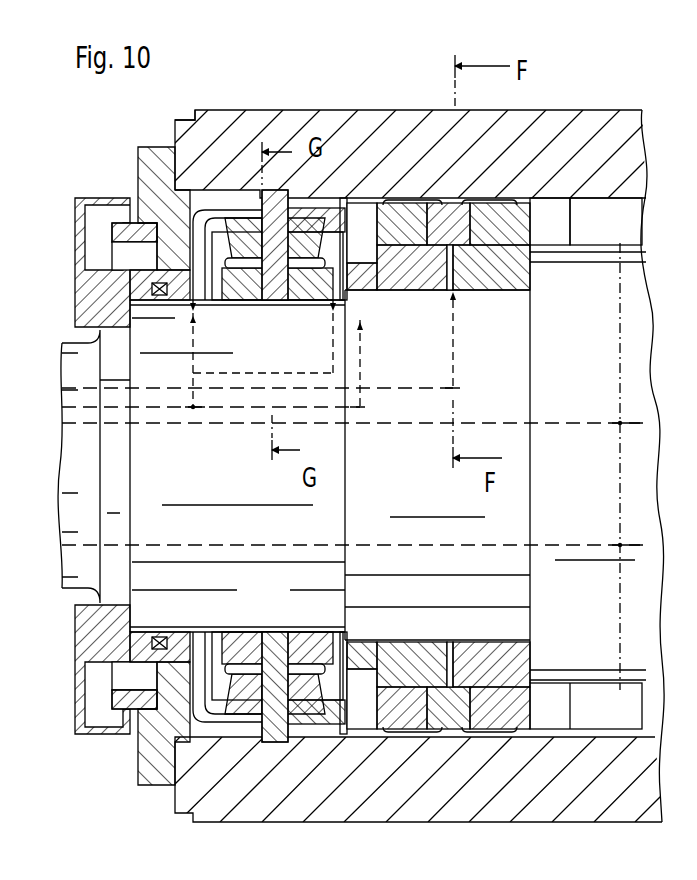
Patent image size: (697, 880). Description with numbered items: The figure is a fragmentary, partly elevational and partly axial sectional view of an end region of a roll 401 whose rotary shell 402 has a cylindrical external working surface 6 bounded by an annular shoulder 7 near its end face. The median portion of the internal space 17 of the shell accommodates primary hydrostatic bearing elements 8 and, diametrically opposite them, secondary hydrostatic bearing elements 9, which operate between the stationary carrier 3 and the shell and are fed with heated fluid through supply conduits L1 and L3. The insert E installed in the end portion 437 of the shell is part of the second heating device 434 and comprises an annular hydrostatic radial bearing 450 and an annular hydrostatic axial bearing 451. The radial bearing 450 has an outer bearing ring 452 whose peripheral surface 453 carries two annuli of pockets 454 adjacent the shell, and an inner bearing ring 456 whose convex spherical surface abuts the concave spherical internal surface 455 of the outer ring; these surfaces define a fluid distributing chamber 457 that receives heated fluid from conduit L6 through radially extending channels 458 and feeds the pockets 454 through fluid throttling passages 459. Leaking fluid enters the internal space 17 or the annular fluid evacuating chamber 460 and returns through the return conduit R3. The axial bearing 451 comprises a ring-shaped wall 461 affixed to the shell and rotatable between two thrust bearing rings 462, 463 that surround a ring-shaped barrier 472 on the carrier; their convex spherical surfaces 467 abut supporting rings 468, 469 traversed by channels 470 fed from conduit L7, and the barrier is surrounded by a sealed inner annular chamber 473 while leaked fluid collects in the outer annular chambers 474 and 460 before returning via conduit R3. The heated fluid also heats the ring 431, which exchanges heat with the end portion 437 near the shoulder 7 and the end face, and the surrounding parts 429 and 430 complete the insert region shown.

The carrier 3 is at (640, 458).
The external working surface 6 is at (242, 111).
The annular shoulder 7 is at (185, 120).
The primary hydrostatic bearing element 8 is at (618, 227).
The secondary hydrostatic bearing element 9 is at (642, 708).
The internal space 17 is at (547, 211).
The roll 401 is at (606, 104).
The shell 402 is at (630, 133).
The lower seal housing 429 is at (180, 674).
The upper seal housing 430 is at (95, 250).
The ring 431 is at (170, 735).
The second heating device 434 is at (355, 225).
The end portion 437 is at (210, 770).
The annular hydrostatic radial bearing 450 is at (510, 296).
The annular hydrostatic axial bearing 451 is at (137, 303).
The outer bearing ring 452 is at (523, 203).
The peripheral surface 453 is at (453, 197).
The pockets 454 is at (398, 200).
The spherical internal surface 455 is at (512, 248).
The inner bearing ring 456 is at (412, 278).
The fluid distributing chamber 457 is at (462, 245).
The radially extending channels 458 is at (451, 288).
The fluid throttling passages 459 is at (370, 282).
The annular fluid evacuating chamber 460 is at (292, 200).
The ring-shaped member (wall) 461 is at (277, 222).
The thrust bearing ring 462 is at (247, 230).
The thrust bearing ring 463 is at (285, 200).
The spherical surfaces 467 is at (170, 193).
The supporting ring 468 is at (173, 217).
The supporting ring 469 is at (297, 225).
The channels 470 is at (212, 222).
The ring-shaped barrier 472 is at (276, 305).
The inner annular chamber 473 is at (243, 265).
The outer annular chamber 474 is at (175, 177).
The supply conduit L1 is at (219, 428).
The supply conduit L3 is at (267, 548).
The conduit L6 is at (388, 391).
The conduit L7 is at (240, 377).
The return conduit R3 is at (155, 409).
The insert E is at (343, 753).